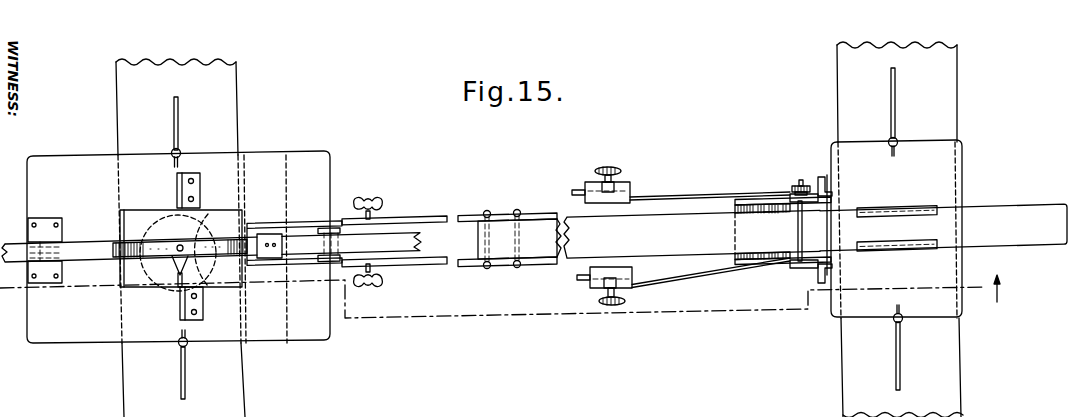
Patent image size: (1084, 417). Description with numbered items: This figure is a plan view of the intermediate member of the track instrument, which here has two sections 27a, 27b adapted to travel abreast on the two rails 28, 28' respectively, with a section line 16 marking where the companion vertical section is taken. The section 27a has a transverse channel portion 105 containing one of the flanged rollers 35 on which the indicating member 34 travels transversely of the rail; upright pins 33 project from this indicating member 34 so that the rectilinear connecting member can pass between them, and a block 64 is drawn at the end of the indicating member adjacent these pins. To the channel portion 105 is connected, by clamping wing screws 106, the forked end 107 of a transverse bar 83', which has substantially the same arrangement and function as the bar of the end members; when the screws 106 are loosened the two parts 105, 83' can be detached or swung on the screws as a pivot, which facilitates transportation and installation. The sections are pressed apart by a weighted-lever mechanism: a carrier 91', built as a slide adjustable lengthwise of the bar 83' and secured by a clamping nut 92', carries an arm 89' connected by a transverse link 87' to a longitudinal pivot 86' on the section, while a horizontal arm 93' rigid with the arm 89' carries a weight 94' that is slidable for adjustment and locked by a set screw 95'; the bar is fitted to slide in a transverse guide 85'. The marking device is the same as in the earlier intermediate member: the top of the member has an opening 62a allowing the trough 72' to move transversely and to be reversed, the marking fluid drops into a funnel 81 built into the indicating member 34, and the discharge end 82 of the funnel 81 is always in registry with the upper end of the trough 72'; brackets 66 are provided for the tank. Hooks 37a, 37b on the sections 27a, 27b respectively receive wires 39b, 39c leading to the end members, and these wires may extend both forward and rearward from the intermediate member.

The rail 28 is at (182, 238).
The rail 28' is at (869, 229).
The section of intermediate member 27a is at (178, 247).
The section of intermediate member 27b is at (896, 228).
The flanged rollers 35 is at (62, 263).
The opening 62a is at (133, 216).
The discharge end of funnel 82 is at (182, 245).
The funnel 81 is at (215, 246).
The trough 72' is at (169, 271).
The brackets 66 is at (177, 195).
The wires 39b is at (178, 127).
The hooks 37a is at (172, 158).
The block 64 is at (265, 233).
The upright pins 33 is at (267, 247).
The transverse channel portion 105 is at (292, 225).
The indicating member 34 is at (422, 242).
The clamping wing screws 106 is at (381, 204).
The forked end 107 is at (460, 216).
The transverse bar 83' is at (692, 234).
The set screw 95' is at (626, 242).
The weight 94' is at (621, 236).
The horizontal arm 93' is at (710, 235).
The carrier 91' is at (783, 235).
The arm 89' is at (779, 276).
The clamping nut 92' is at (789, 184).
The transverse links 87' is at (800, 231).
The longitudinal pivots 86' is at (846, 229).
The transverse guide 85' is at (943, 216).
The wires 39c is at (895, 98).
The hooks 37b is at (897, 153).
The section line 16 is at (1005, 288).